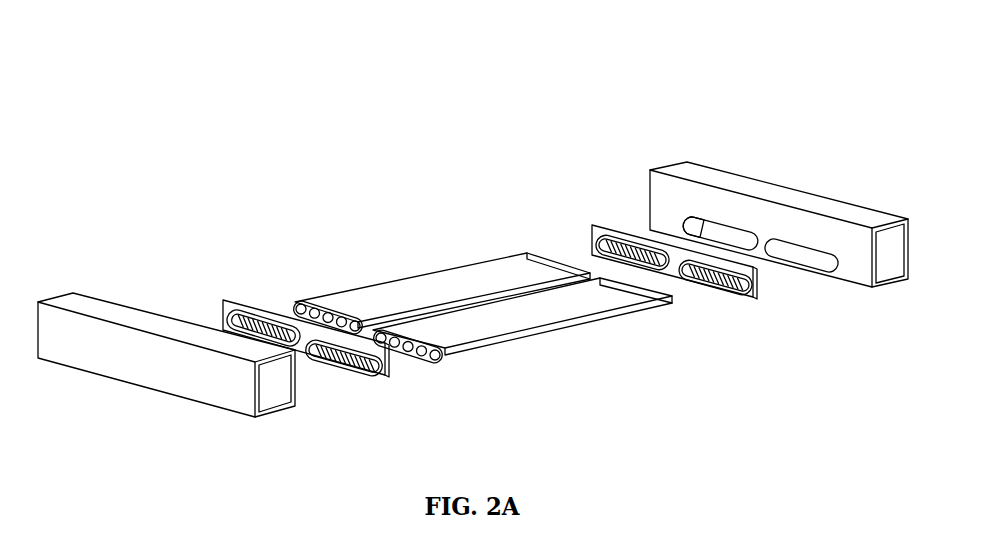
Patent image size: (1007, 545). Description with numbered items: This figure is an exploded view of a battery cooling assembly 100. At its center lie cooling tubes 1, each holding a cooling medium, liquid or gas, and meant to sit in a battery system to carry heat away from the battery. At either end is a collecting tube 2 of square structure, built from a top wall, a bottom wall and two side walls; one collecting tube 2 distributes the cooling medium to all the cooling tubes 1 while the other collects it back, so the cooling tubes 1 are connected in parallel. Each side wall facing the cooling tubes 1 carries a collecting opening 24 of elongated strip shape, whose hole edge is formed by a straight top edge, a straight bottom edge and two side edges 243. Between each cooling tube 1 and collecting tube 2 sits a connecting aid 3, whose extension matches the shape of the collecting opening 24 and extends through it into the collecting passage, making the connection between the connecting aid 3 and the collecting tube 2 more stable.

The battery cooling assembly 100 is at (482, 57).
The cooling tube 1 is at (407, 290).
The collecting tube 2 is at (152, 325).
The connecting aid 3 is at (223, 310).
The collecting opening 24 is at (717, 230).
The side edge 243 is at (688, 222).